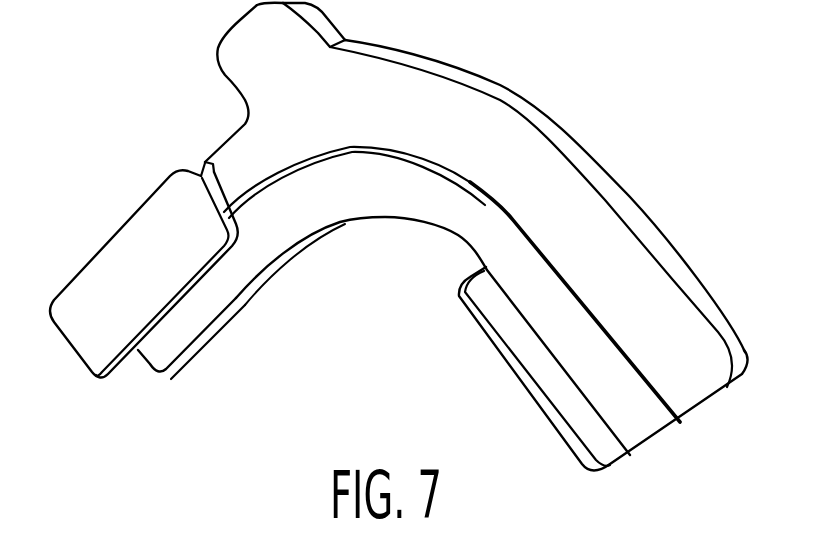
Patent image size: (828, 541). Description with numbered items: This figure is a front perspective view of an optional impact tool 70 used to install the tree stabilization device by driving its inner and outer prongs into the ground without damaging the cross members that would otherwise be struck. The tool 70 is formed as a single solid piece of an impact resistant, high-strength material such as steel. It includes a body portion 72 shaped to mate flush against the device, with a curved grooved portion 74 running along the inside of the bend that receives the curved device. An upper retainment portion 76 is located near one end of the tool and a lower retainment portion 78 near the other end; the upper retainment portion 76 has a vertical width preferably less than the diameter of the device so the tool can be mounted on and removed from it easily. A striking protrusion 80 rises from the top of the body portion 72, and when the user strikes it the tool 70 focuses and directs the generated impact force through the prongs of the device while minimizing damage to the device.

The impact tool 70 is at (697, 115).
The body portion 72 is at (483, 103).
The curved grooved portion 74 is at (367, 203).
The upper retainment portion 76 is at (108, 260).
The lower retainment portion 78 is at (617, 453).
The striking protrusion 80 is at (233, 28).